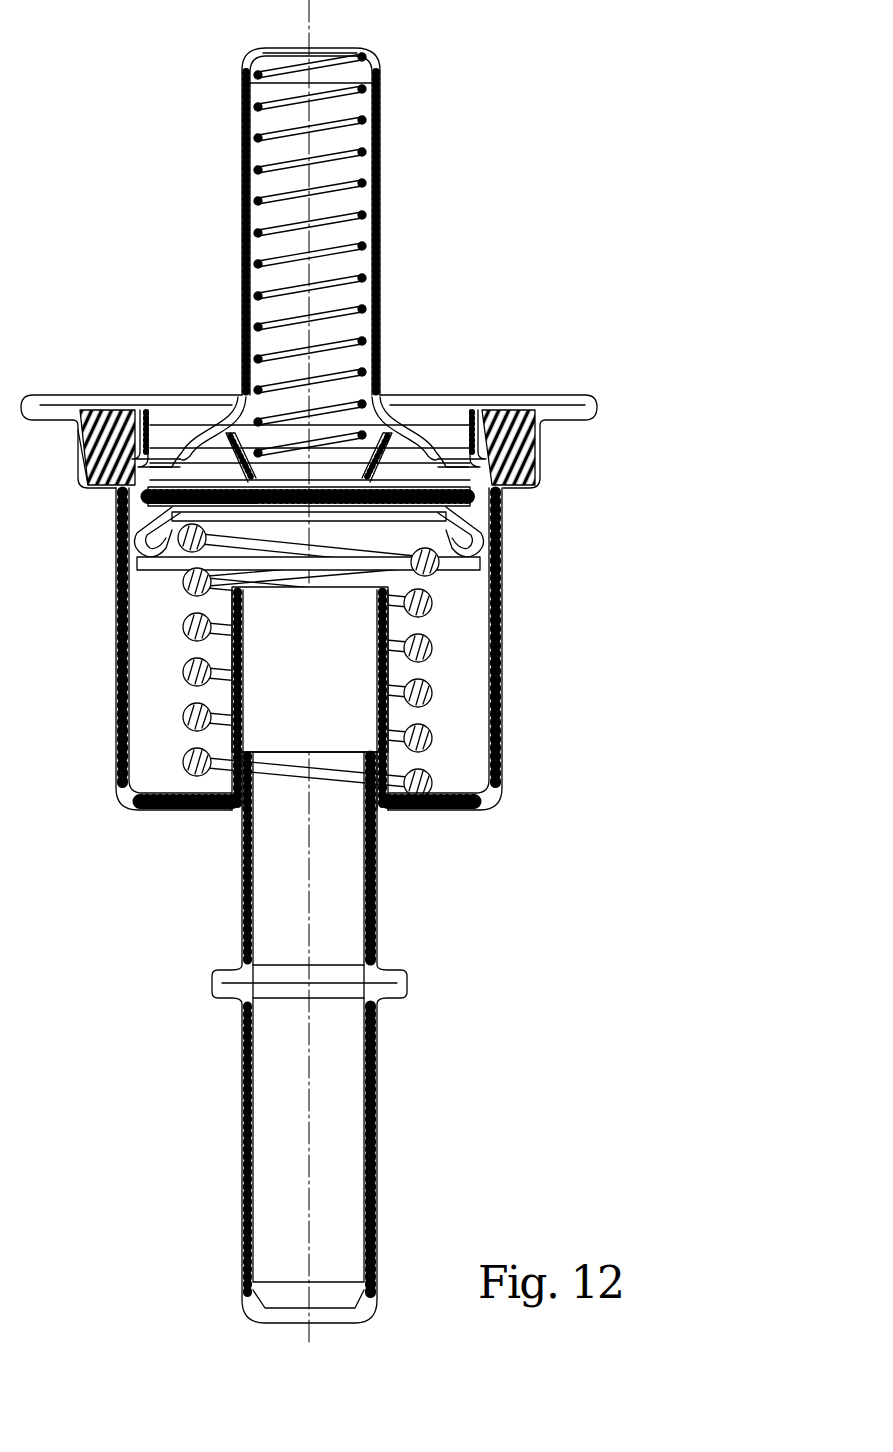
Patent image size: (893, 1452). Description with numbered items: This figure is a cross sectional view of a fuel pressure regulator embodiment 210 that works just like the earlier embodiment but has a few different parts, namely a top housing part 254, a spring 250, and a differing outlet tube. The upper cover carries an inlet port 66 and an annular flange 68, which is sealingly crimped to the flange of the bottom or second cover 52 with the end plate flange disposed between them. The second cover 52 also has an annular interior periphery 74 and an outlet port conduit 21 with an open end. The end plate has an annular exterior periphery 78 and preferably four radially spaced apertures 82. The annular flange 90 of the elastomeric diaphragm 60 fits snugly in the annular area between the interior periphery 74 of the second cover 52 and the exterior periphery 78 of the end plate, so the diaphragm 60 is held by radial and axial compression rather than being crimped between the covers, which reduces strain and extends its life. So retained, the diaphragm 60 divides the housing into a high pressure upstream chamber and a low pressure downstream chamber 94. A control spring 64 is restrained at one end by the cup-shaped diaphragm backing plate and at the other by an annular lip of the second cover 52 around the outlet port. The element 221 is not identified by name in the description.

The inlet port 66 is at (338, 48).
The spring 250 is at (381, 114).
The top housing part 254 is at (365, 214).
The fuel pressure regulator embodiment 210 is at (476, 312).
The annular interior periphery 74 is at (118, 412).
The radially spaced apertures 82 is at (177, 492).
The annular flange 68 is at (580, 393).
The annular exterior periphery 78 is at (83, 467).
The annular flange 90 is at (541, 447).
The diaphragm 60 is at (496, 543).
The control spring 64 is at (434, 603).
The conduit 21 is at (392, 673).
The second cover 52 is at (502, 732).
The low pressure downstream chamber 94 is at (140, 683).
The piston rod 221 is at (378, 912).